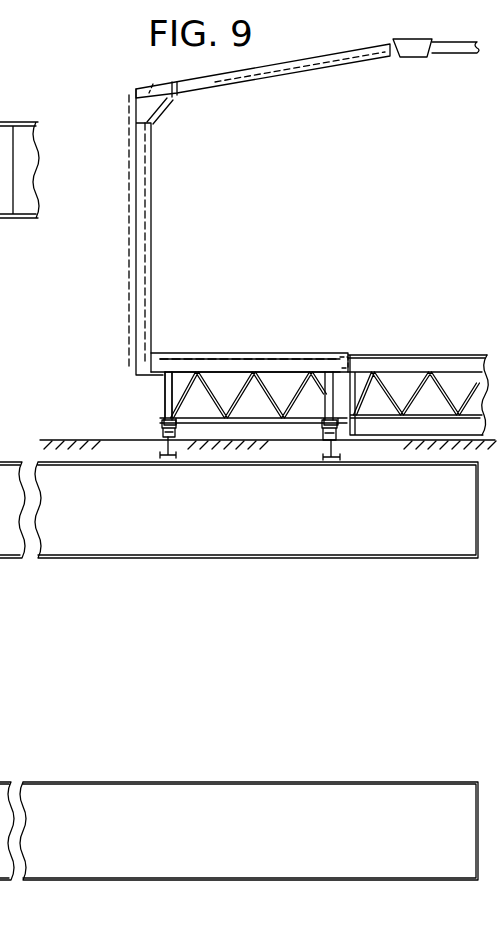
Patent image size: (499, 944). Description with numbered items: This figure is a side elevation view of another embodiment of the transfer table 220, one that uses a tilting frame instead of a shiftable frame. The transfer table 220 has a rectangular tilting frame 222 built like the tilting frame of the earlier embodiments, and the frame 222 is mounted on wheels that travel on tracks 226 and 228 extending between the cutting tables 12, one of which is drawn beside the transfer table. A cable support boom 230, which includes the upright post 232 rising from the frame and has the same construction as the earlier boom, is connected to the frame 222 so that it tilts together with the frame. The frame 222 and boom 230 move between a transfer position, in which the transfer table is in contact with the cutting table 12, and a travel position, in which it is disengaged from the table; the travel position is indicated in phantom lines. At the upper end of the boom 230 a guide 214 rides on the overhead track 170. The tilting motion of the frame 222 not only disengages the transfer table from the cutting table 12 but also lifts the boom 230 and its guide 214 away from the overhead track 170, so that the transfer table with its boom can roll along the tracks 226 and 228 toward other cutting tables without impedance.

The cutting table 12 is at (413, 357).
The overhead track 170 is at (458, 42).
The guide 214 is at (413, 54).
The transfer table 220 is at (258, 353).
The tilting frame 222 is at (165, 403).
The track 226 is at (163, 443).
The track 228 is at (326, 443).
The cable support boom 230 is at (217, 88).
The upright post 232 is at (135, 150).